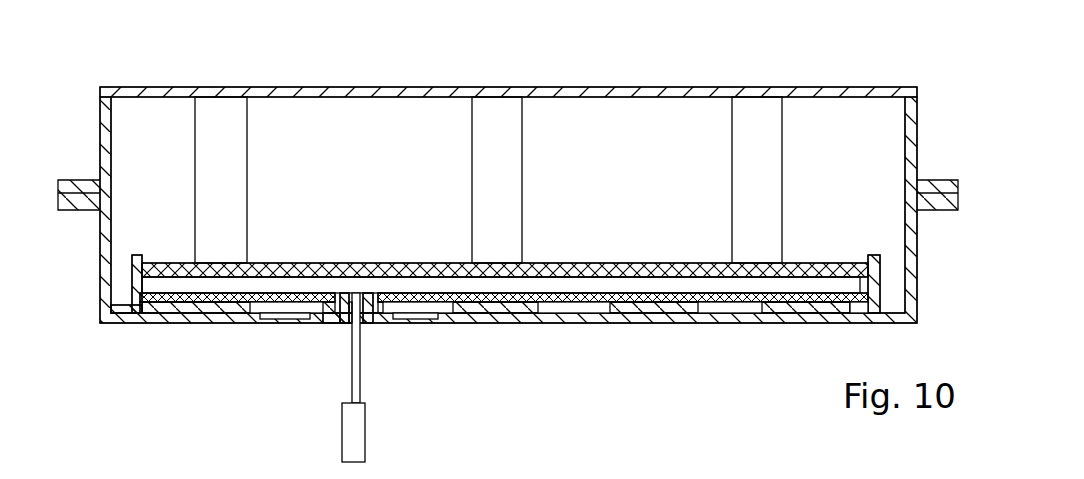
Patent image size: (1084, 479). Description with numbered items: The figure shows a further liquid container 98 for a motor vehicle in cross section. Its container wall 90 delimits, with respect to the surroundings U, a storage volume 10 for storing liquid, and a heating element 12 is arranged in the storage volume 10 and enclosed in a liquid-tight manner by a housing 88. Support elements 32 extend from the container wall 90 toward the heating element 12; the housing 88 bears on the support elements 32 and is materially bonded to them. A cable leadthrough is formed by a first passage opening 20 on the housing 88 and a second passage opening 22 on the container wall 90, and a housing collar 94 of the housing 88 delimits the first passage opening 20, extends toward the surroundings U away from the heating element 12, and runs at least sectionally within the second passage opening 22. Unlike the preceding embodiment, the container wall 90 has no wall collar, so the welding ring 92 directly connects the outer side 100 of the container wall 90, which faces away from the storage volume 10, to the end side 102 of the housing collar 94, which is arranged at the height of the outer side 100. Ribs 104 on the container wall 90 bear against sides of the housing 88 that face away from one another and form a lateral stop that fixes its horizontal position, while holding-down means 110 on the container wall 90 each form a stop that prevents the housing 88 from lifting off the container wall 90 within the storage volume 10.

The liquid container 98 is at (137, 82).
The holding-down means 110 is at (213, 135).
The storage volume 10 is at (636, 192).
The surroundings U is at (674, 394).
The heating element 12 is at (203, 285).
The support elements 32 is at (687, 310).
The housing 88 is at (237, 304).
The outer side 100 is at (455, 320).
The container wall 90 is at (558, 318).
The ribs 104 is at (130, 292).
The first passage opening 20 is at (367, 326).
The welding ring 92 is at (335, 320).
The housing collar 94 is at (381, 330).
The second passage opening 22 is at (328, 318).
The end side 102 is at (342, 322).